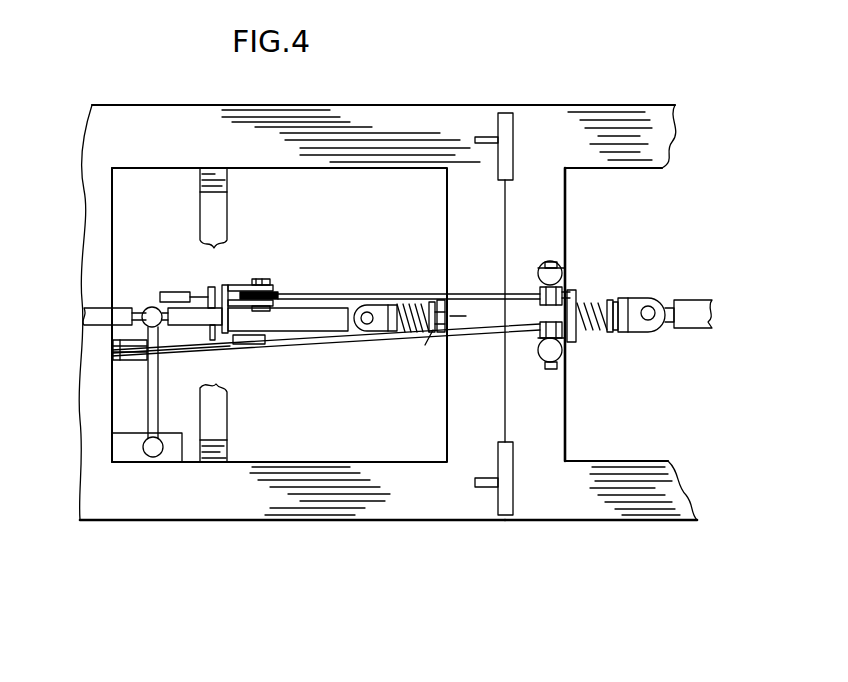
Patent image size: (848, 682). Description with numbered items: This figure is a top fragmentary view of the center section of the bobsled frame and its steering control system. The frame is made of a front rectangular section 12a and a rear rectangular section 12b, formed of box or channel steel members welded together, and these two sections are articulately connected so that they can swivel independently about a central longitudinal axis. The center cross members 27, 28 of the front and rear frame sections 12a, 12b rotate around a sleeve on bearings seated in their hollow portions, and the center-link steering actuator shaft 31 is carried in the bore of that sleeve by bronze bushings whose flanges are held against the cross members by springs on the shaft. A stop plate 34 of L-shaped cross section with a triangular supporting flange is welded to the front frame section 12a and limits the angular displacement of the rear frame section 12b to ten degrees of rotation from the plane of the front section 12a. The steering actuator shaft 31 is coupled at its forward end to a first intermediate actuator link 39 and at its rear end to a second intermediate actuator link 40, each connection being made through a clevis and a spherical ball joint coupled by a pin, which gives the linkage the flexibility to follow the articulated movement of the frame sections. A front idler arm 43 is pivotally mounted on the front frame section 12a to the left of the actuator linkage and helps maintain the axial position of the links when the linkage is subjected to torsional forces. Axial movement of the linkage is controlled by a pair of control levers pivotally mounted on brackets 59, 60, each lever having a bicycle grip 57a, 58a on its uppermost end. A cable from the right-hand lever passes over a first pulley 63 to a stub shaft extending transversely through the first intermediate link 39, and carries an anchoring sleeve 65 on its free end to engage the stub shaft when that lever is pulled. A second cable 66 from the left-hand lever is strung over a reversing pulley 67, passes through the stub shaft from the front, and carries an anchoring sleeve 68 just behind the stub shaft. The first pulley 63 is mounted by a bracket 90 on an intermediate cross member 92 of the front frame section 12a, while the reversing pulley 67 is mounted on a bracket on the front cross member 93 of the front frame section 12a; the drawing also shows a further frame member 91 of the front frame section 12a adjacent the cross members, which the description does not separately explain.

The front rectangular frame section 12a is at (366, 523).
The rear rectangular frame section 12b is at (596, 523).
The center cross member 27 is at (452, 438).
The center cross member 28 is at (566, 432).
The center-link steering actuator shaft 31 is at (437, 300).
The stop plate 34 is at (503, 120).
The first intermediate actuator link 39 is at (302, 320).
The second intermediate actuator link 40 is at (700, 306).
The front idler arm 43 is at (158, 372).
The bicycle grip 57a is at (542, 268).
The bicycle grip 58a is at (552, 350).
The bracket 59 is at (560, 272).
The bracket 60 is at (560, 368).
The pulley 63 is at (276, 292).
The anchoring sleeve 65 is at (176, 292).
The second cable 66 is at (350, 348).
The reversing pulley 67 is at (128, 364).
The anchoring sleeve 68 is at (252, 344).
The bracket 90 is at (235, 285).
The hatched block 91 is at (228, 210).
The intermediate cross member 92 is at (128, 338).
The front cross member 93 is at (113, 218).